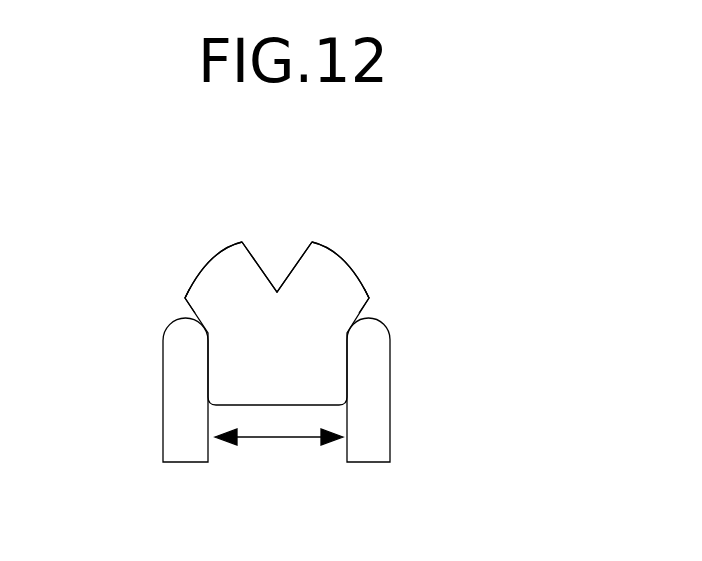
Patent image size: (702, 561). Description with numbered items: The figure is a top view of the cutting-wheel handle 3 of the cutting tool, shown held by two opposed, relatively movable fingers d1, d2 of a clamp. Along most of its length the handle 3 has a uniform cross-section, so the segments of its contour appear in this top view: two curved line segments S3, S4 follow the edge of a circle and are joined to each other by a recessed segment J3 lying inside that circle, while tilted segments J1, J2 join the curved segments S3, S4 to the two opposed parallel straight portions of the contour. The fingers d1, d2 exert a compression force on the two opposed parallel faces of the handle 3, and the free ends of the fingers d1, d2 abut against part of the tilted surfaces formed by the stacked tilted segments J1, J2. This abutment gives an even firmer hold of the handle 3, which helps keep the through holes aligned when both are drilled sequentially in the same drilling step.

The cutting-wheel handle 3 is at (397, 267).
The curved line segment S3 is at (210, 258).
The curved line segment S4 is at (347, 257).
The recessed segment J3 is at (277, 288).
The tilted segment J1 is at (185, 300).
The tilted segment J2 is at (367, 300).
The movable finger d1 is at (172, 387).
The movable finger d2 is at (382, 385).